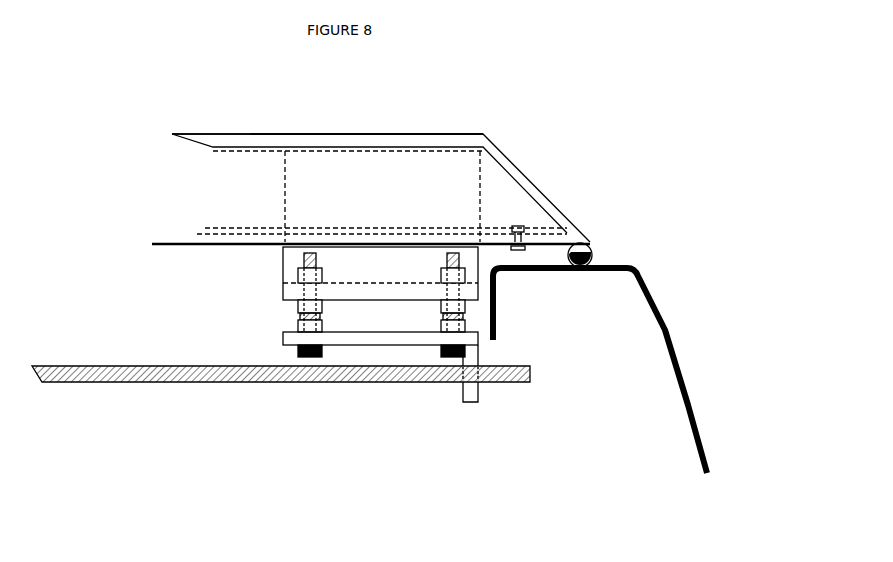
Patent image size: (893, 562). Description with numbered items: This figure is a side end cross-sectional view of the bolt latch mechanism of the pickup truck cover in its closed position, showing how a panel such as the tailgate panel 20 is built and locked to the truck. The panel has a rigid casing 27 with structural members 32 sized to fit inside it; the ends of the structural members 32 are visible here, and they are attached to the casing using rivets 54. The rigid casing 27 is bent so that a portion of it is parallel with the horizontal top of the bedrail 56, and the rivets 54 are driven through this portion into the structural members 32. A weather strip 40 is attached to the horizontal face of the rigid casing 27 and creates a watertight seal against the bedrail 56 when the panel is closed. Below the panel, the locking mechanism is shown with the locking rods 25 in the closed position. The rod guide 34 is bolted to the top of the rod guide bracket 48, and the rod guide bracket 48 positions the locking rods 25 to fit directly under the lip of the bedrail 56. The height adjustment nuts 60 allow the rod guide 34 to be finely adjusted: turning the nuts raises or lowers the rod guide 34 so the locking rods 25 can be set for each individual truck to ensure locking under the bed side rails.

The tailgate panel 20 is at (212, 132).
The rigid casing 27 is at (396, 134).
The structural members 32 is at (213, 147).
The rivets 54 is at (516, 228).
The weather strip 40 is at (598, 250).
The rod guide bracket 48 is at (285, 277).
The height adjustment nuts 60 is at (296, 312).
The locking rods 25 is at (150, 382).
The rod guide 34 is at (478, 403).
The bedrail 56 is at (634, 263).